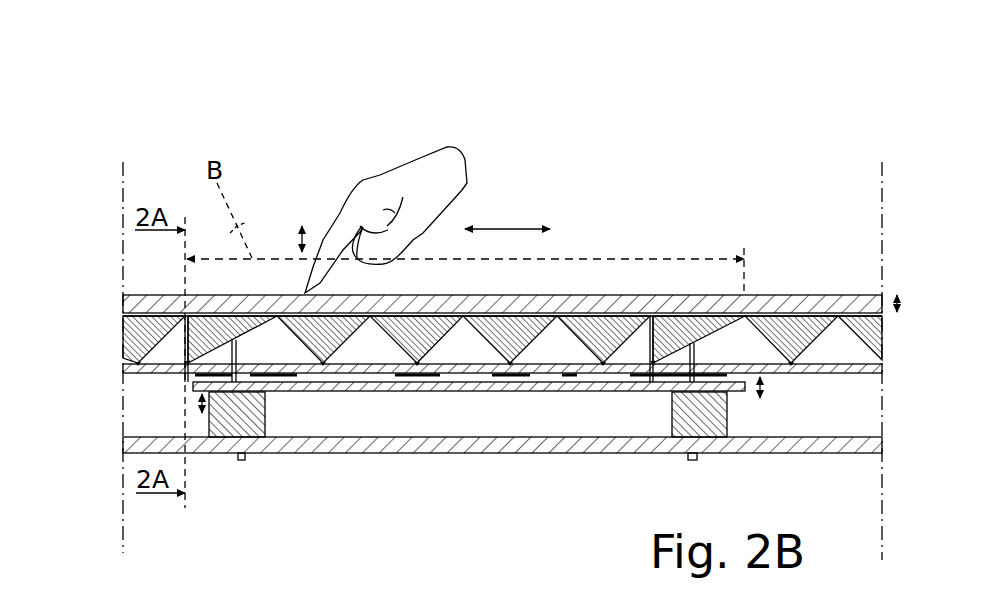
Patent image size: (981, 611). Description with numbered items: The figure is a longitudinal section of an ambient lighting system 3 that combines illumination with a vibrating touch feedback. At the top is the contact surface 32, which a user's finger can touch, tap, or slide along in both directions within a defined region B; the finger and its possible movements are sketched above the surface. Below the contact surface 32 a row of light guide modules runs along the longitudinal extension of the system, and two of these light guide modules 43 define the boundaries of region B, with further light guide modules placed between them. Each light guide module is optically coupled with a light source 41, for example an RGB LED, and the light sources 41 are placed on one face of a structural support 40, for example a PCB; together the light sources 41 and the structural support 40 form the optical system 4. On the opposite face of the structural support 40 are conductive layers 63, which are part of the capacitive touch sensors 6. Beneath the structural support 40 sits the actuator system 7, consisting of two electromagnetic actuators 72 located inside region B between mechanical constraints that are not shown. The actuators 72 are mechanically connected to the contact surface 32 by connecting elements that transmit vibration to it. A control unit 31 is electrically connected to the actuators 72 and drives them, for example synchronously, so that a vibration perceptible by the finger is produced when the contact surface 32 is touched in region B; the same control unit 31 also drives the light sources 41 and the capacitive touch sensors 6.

The ambient lighting system 3 is at (150, 167).
The contact surface 32 is at (143, 303).
The optical system 4 is at (115, 332).
The light guide modules 43 is at (207, 330).
The light sources 41 is at (790, 364).
The structural support 40 is at (857, 369).
The control unit 31 is at (223, 425).
The electromagnetic actuators 72 is at (253, 410).
The conductive layers 63 is at (545, 376).
The capacitive touch sensors 6 is at (528, 472).
The actuator system 7 is at (198, 505).